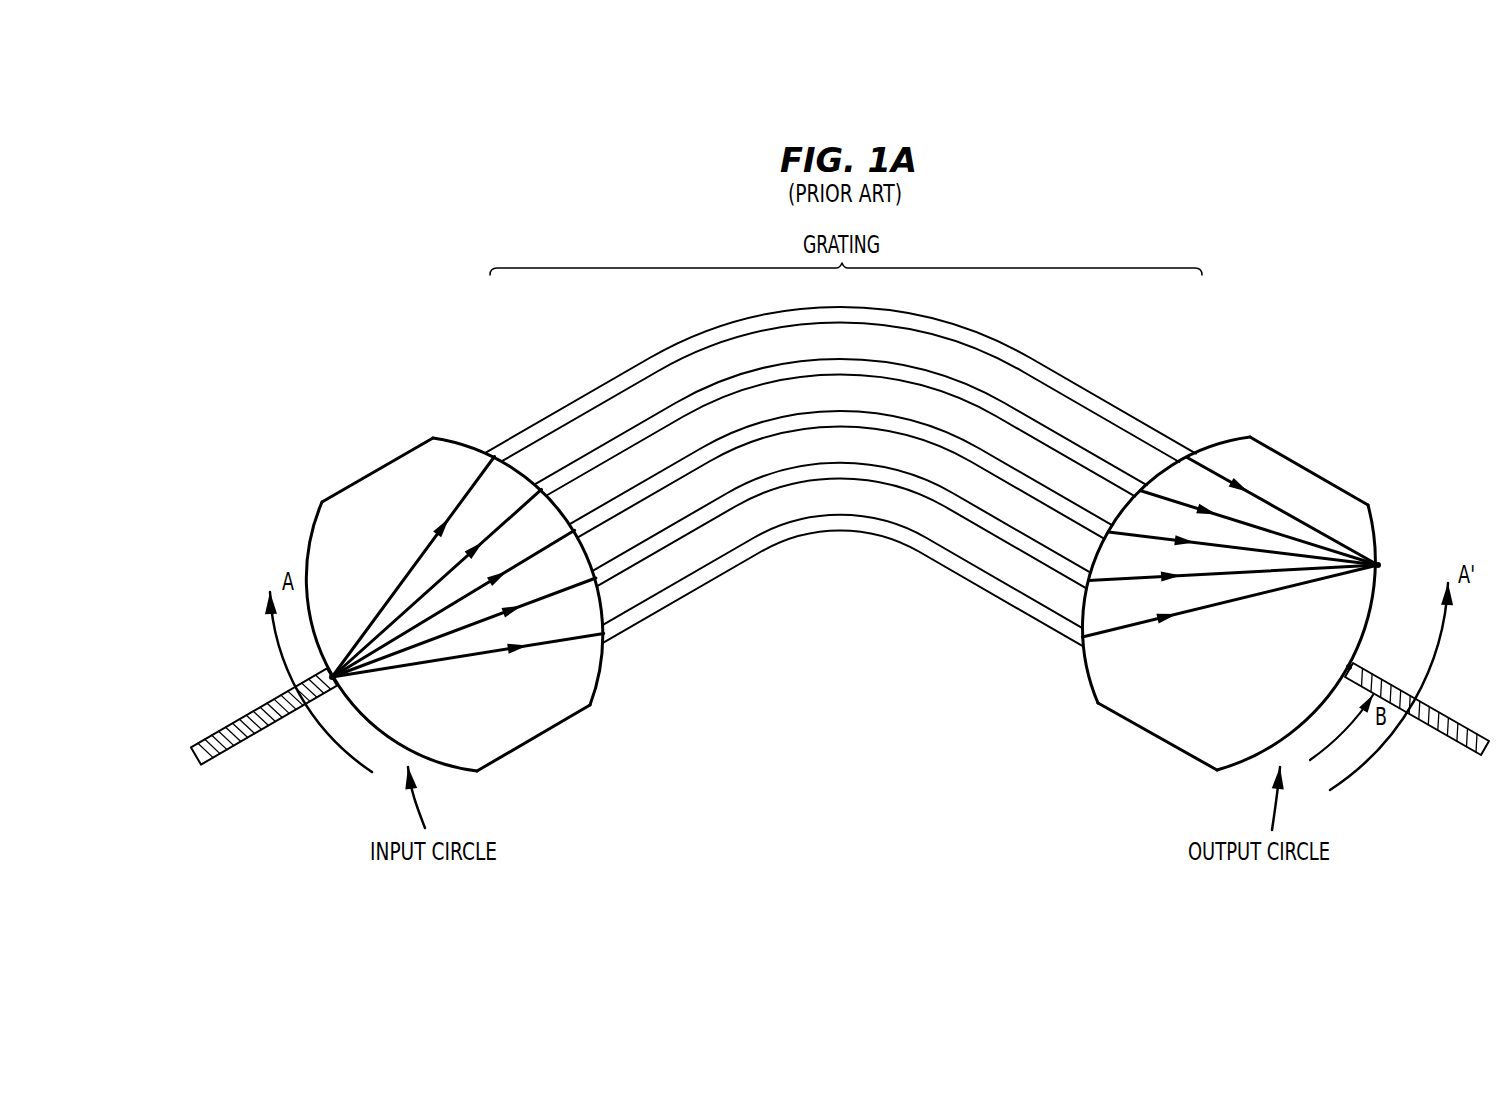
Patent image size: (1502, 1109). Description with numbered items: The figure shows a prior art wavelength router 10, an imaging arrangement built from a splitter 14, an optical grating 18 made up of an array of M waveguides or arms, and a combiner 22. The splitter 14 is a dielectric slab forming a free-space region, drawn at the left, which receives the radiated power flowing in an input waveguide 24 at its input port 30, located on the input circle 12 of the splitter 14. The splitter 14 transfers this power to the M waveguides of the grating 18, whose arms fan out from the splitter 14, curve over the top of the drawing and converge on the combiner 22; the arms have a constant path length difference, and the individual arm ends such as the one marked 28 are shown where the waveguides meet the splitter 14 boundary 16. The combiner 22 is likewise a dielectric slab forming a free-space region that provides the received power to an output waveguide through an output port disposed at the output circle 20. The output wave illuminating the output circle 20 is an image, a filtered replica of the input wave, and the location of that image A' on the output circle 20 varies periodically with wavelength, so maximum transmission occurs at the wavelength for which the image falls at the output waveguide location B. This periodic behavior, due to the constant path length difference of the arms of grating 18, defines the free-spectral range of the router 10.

The wavelength router 10 is at (800, 743).
The input circle 12 is at (313, 528).
The splitter 14 is at (378, 470).
The splitter output arc 16 is at (465, 443).
The optical grating 18 is at (838, 532).
The output circle 20 is at (1370, 525).
The combiner 22 is at (1308, 465).
The input waveguide 24 is at (210, 733).
The innermost grating waveguide end 28 is at (610, 636).
The input port 30 is at (325, 697).